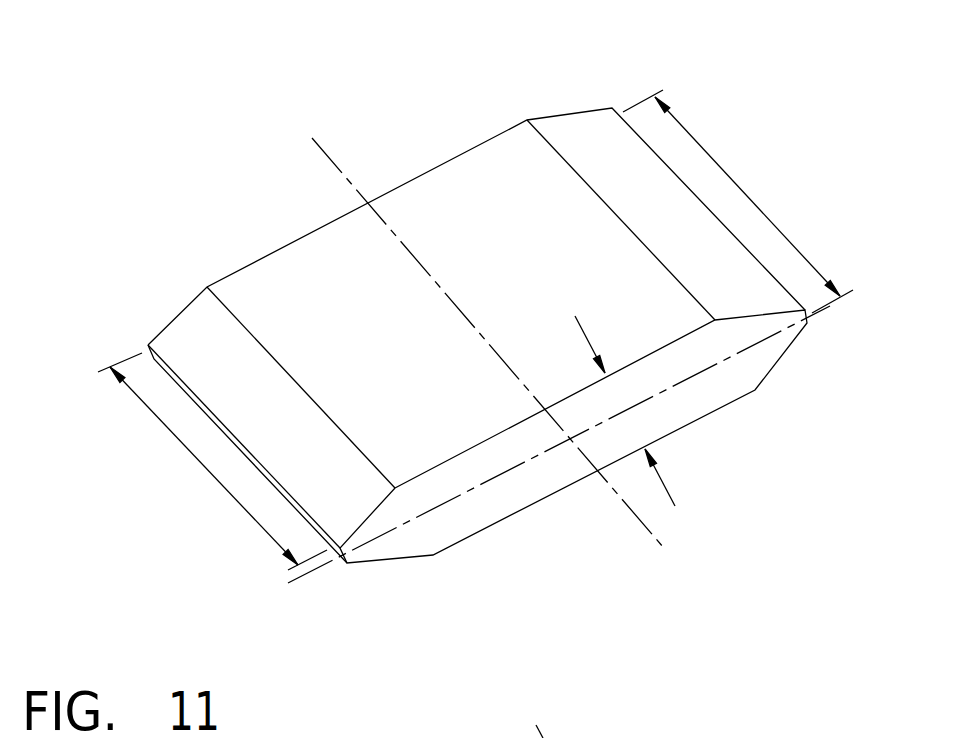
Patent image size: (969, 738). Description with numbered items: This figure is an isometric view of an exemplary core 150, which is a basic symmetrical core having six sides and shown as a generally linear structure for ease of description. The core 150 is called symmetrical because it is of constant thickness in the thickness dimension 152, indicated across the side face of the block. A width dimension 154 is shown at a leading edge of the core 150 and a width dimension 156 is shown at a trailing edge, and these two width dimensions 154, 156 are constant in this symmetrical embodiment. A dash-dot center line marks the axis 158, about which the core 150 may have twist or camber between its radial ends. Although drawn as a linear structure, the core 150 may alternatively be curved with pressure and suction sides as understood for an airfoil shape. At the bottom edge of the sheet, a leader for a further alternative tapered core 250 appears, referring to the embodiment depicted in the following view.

The core 150 is at (721, 67).
The thickness dimension 152 is at (661, 486).
The width dimension at leading edge 154 is at (207, 470).
The width dimension at trailing edge 156 is at (750, 195).
The axis 158 is at (448, 264).
The core 250 is at (716, 722).